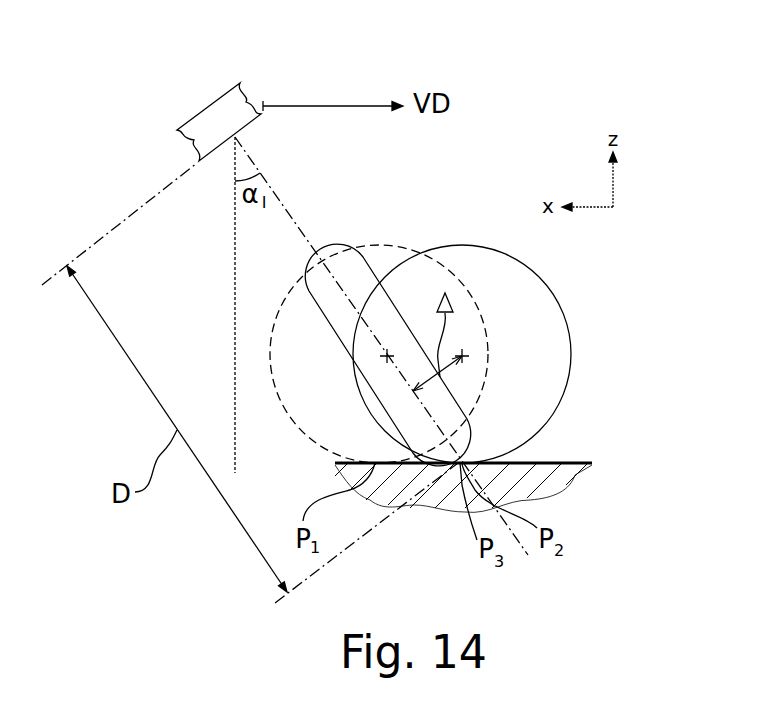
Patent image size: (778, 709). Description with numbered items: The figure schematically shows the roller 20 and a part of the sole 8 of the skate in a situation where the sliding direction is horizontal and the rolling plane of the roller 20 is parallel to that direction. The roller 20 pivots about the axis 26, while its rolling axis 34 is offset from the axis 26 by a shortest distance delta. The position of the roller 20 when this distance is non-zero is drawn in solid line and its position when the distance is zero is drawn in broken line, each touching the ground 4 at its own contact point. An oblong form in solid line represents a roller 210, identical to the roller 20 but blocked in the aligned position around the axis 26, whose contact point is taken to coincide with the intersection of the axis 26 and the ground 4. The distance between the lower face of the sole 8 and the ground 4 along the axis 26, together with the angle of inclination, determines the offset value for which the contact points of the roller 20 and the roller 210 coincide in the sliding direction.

The sole 8 is at (210, 130).
The axis 26 is at (278, 197).
The roller 20 is at (390, 246).
The roller 210 is at (330, 258).
The axis 34 is at (387, 358).
The ground 4 is at (580, 462).